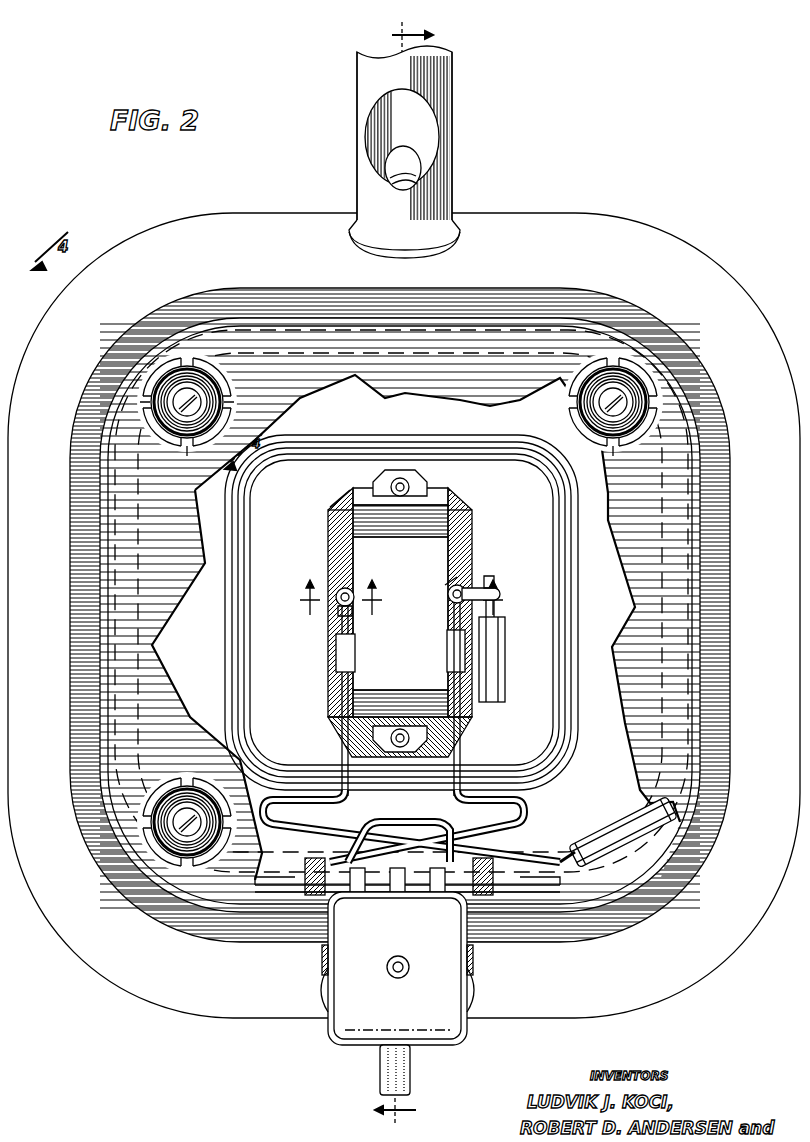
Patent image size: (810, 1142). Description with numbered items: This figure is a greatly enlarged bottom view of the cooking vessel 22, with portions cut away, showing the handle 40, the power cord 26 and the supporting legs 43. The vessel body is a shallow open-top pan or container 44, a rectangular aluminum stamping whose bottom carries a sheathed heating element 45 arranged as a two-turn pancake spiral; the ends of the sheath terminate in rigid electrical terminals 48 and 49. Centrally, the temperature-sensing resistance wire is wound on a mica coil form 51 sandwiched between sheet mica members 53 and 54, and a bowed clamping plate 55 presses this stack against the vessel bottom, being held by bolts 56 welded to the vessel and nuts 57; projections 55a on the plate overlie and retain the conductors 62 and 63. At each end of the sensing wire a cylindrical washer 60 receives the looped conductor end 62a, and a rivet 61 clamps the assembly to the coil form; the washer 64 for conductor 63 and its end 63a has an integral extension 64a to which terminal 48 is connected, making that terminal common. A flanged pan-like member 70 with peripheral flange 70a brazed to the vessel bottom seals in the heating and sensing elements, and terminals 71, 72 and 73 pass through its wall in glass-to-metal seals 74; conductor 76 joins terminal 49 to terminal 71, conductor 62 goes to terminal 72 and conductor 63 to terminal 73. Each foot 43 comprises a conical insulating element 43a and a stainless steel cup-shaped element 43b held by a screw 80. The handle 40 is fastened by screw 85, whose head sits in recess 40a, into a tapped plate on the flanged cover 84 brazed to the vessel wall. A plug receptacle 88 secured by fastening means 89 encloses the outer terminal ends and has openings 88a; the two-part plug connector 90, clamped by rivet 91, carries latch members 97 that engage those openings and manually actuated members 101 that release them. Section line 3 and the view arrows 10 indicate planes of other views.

The section line 3- 3 is at (391, 573).
The direction arrows 10 is at (398, 585).
The cooking vessel 22 is at (643, 224).
The power cord 26 is at (380, 1076).
The handle 40 is at (453, 88).
The recess 40a is at (420, 135).
The supporting legs 43 is at (222, 385).
The insulating element 43a is at (234, 402).
The cup-shaped element 43b is at (197, 448).
The pan or container 44 is at (680, 274).
The heating element 45 is at (560, 613).
The electrical terminal 48 is at (490, 578).
The electrical terminal 49 is at (575, 848).
The coil form 51 is at (334, 530).
The sheet mica member 53 is at (339, 506).
The sheet mica member 54 is at (368, 492).
The clamping plate 55 is at (412, 602).
The projections 55a is at (336, 662).
The bolts 56 is at (398, 477).
The nuts 57 is at (408, 481).
The cylindrical washer 60 is at (354, 600).
The rivet 61 is at (336, 593).
The electrical conductor 62 is at (340, 630).
The conductor end 62a is at (337, 609).
The electrical conductor 63 is at (493, 699).
The tube end 63a is at (448, 580).
The cylindrical washer 64 is at (454, 602).
The integral extension 64a is at (496, 595).
The pan-like member 70 is at (682, 598).
The peripheral flange 70a is at (708, 597).
The terminal 71 is at (357, 907).
The terminal 72 is at (394, 902).
The terminal 73 is at (434, 907).
The glass-to-metal seals 74 is at (364, 863).
The conductor 76 is at (512, 821).
The screw 80 is at (198, 380).
The flanged cover 84 is at (440, 242).
The screw 85 is at (410, 175).
The plug receptacle 88 is at (466, 918).
The openings 88a is at (322, 955).
The fastening means 89 is at (310, 896).
The plug connector 90 is at (428, 1032).
The rivet 91 is at (396, 978).
The latch members 97 is at (318, 958).
The manually actuated members 101 is at (320, 1004).